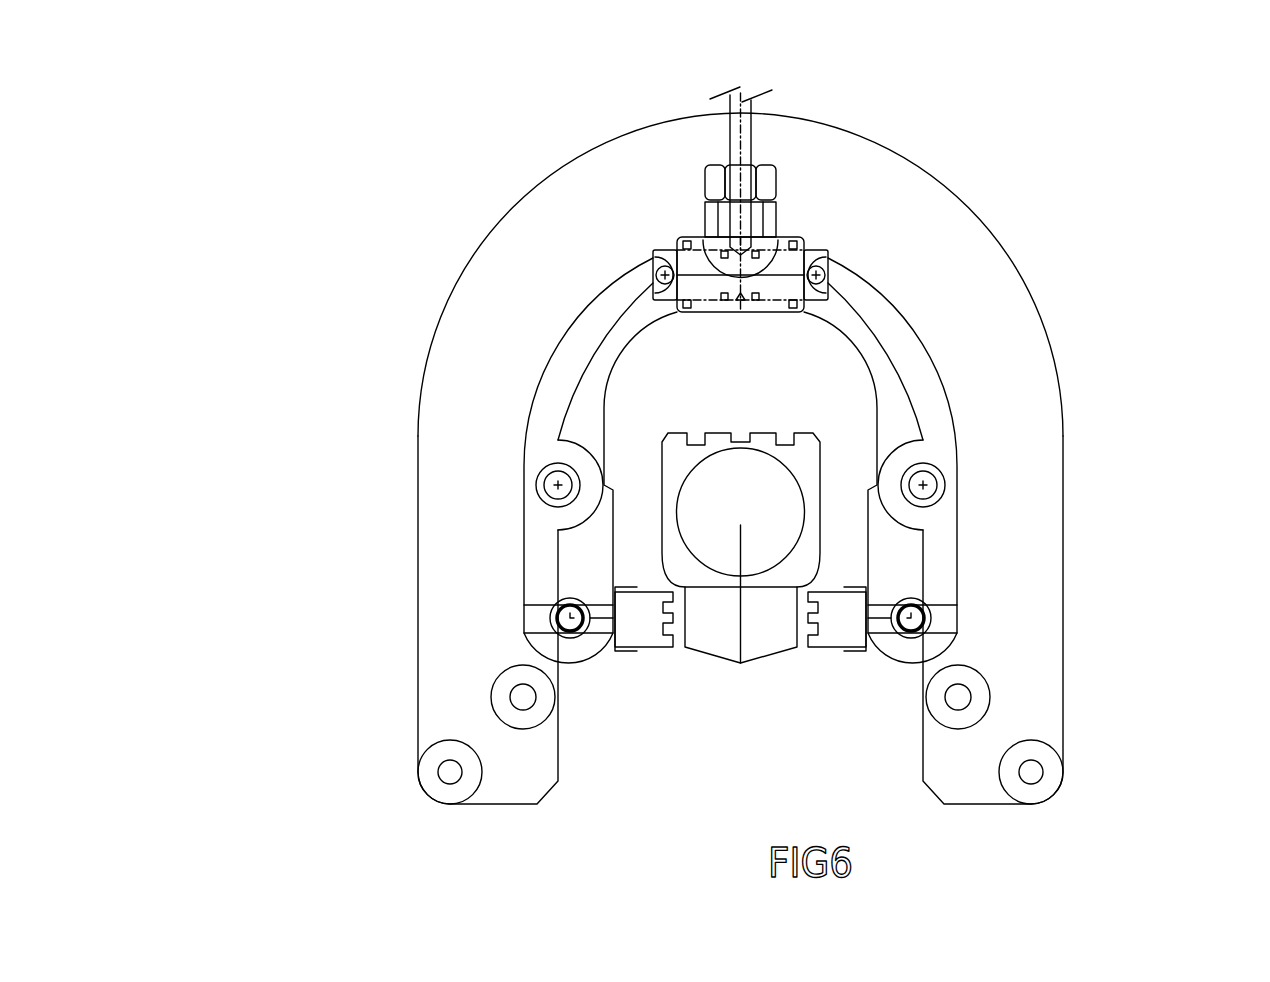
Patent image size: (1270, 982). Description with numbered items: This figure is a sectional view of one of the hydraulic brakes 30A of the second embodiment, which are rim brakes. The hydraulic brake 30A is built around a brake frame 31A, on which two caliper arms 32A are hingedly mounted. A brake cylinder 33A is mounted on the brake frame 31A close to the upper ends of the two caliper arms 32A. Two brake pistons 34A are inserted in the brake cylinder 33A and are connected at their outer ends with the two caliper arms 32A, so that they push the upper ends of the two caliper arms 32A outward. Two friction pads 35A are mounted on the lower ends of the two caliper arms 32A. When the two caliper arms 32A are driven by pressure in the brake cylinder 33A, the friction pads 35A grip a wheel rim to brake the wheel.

The hydraulic brake 30A is at (368, 547).
The brake frame 31A is at (1010, 325).
The caliper arm 32A is at (570, 365).
The brake cylinder 33A is at (793, 263).
The brake piston 34A is at (687, 261).
The friction pad 35A is at (638, 632).